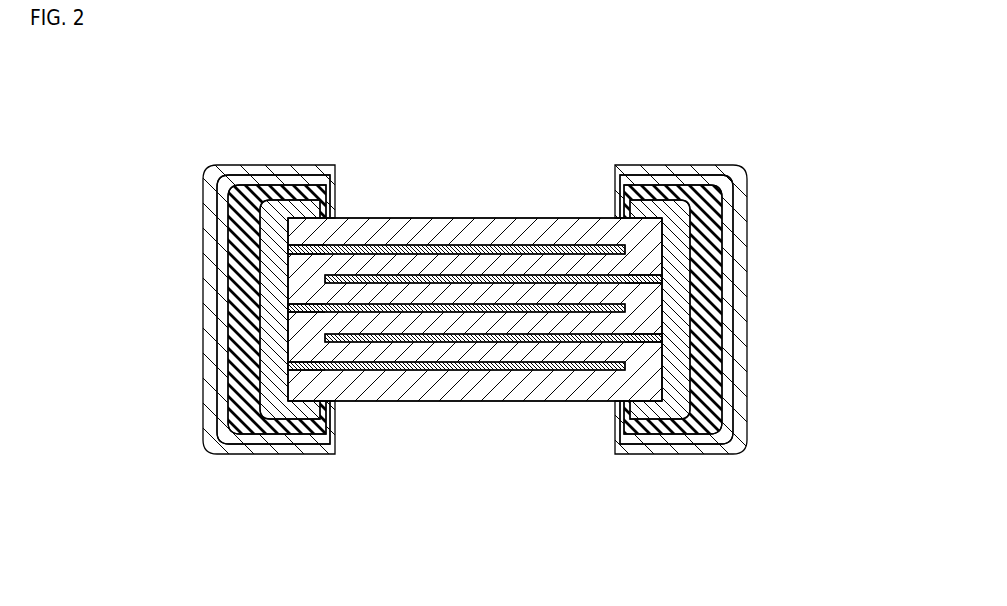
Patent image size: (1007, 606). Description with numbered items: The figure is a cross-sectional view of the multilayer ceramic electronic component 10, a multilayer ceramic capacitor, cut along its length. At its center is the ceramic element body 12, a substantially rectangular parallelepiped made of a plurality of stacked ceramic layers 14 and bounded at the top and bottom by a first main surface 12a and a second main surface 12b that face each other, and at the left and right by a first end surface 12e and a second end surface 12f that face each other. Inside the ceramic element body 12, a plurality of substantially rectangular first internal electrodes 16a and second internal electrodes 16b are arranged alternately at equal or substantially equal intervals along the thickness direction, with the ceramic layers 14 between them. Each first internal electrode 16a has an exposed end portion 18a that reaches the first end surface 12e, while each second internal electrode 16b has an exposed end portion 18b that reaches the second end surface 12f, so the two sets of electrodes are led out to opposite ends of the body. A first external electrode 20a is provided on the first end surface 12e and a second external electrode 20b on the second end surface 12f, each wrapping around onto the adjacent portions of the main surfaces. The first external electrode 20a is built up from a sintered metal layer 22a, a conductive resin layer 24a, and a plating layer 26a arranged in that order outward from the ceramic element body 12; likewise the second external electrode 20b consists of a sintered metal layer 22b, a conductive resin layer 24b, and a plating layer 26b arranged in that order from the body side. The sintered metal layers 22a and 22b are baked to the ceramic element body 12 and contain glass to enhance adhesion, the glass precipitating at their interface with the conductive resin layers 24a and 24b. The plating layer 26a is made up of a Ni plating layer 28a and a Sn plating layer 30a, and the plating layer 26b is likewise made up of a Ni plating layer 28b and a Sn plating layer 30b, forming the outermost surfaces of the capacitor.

The multilayer ceramic electronic component 10 is at (210, 70).
The ceramic element body 12 is at (402, 218).
The first main surface 12a is at (552, 218).
The second main surface 12b is at (573, 403).
The first end surface 12e is at (250, 376).
The second end surface 12f is at (700, 376).
The ceramic layer 14 is at (345, 401).
The first internal electrode 16a is at (450, 363).
The second internal electrode 16b is at (570, 340).
The exposed end portion 18a is at (340, 345).
The exposed end portion 18b is at (650, 335).
The first external electrode 20a is at (205, 171).
The second external electrode 20b is at (745, 171).
The sintered metal layer 22a is at (258, 238).
The sintered metal layer 22b is at (692, 238).
The conductive resin layer 24a is at (228, 272).
The conductive resin layer 24b is at (722, 272).
The plating layer 26a is at (787, 478).
The plating layer 26b is at (787, 536).
The Ni plating layer 28a is at (218, 310).
The Ni plating layer 28b is at (732, 310).
The Sn plating layer 30a is at (212, 333).
The Sn plating layer 30b is at (738, 333).